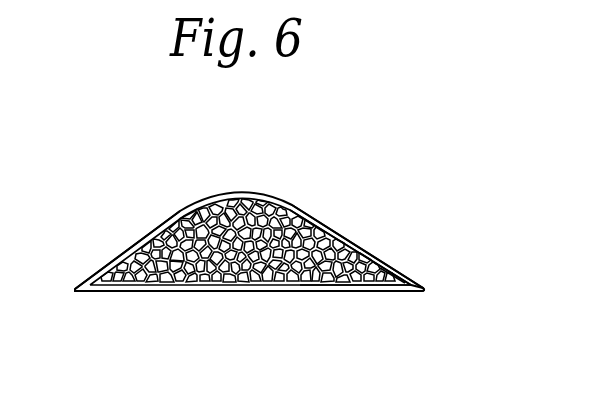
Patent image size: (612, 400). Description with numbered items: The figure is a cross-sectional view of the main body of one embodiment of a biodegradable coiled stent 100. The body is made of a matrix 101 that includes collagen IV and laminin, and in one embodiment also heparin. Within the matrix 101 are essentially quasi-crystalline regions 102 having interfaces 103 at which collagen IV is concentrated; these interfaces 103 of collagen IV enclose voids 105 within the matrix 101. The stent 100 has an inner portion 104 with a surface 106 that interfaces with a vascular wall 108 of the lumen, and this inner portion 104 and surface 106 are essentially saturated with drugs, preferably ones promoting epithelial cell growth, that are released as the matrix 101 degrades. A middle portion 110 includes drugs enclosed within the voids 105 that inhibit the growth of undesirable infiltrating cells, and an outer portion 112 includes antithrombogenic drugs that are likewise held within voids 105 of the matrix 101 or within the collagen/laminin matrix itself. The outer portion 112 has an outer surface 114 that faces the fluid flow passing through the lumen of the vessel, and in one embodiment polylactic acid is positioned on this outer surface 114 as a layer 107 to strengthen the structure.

The coiled stent 100 is at (110, 232).
The matrix 101 is at (398, 270).
The quasi-crystalline regions 102 is at (88, 289).
The interfaces 103 is at (152, 235).
The inner portion 104 is at (390, 291).
The voids 105 is at (367, 291).
The surface 106 is at (358, 291).
The layer 107 is at (422, 284).
The vascular wall 108 is at (182, 290).
The middle portion 110 is at (371, 258).
The outer portion 112 is at (243, 213).
The outer surface 114 is at (291, 204).